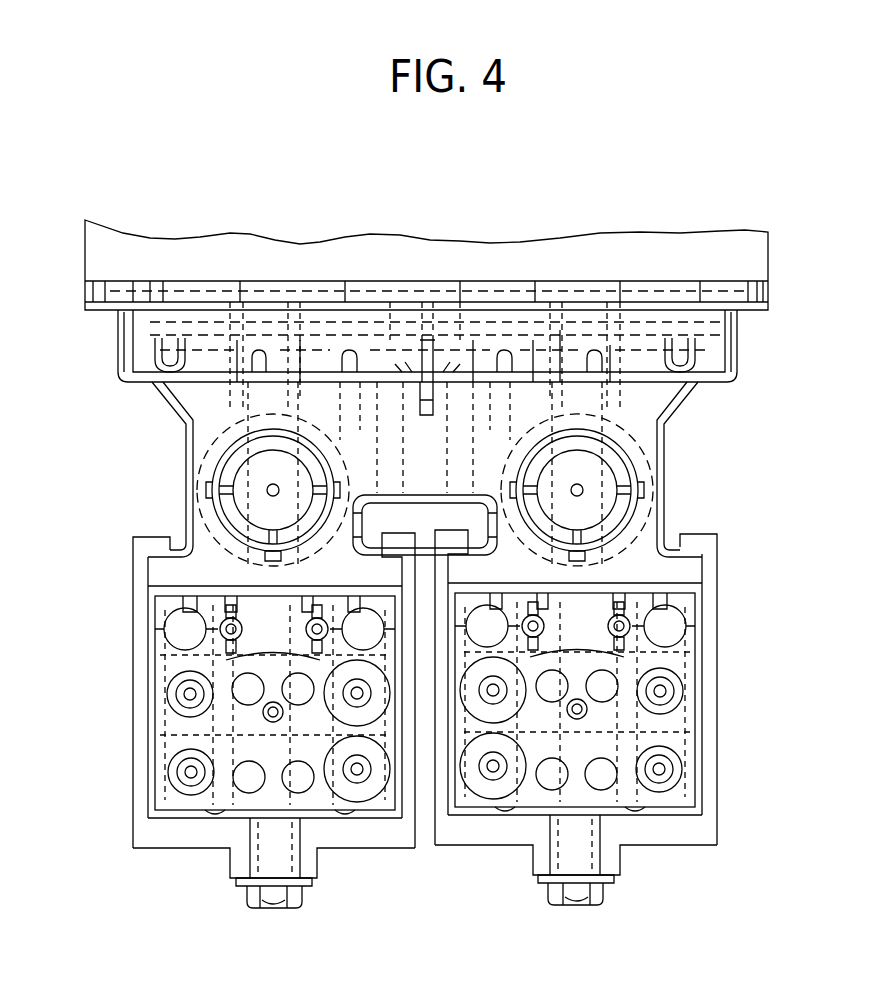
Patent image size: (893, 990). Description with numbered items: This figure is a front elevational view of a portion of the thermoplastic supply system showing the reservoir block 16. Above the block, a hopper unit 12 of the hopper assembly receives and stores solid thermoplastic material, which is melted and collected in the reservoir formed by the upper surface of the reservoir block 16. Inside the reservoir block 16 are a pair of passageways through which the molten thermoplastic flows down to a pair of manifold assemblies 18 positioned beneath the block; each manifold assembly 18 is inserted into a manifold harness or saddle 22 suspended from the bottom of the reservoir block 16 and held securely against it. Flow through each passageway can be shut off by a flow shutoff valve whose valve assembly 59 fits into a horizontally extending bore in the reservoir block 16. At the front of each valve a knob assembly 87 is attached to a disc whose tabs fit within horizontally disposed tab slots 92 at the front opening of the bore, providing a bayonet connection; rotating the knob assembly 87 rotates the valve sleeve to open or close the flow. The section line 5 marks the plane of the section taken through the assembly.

The section line 5- 5 is at (577, 222).
The hopper unit 12 is at (166, 253).
The reservoir block 16 is at (120, 357).
The knob assembly 87 is at (243, 480).
The tab slots 92 is at (207, 492).
The valve assembly 59 is at (215, 533).
The manifold harness 22 is at (133, 645).
The manifold assembly 18 is at (217, 725).